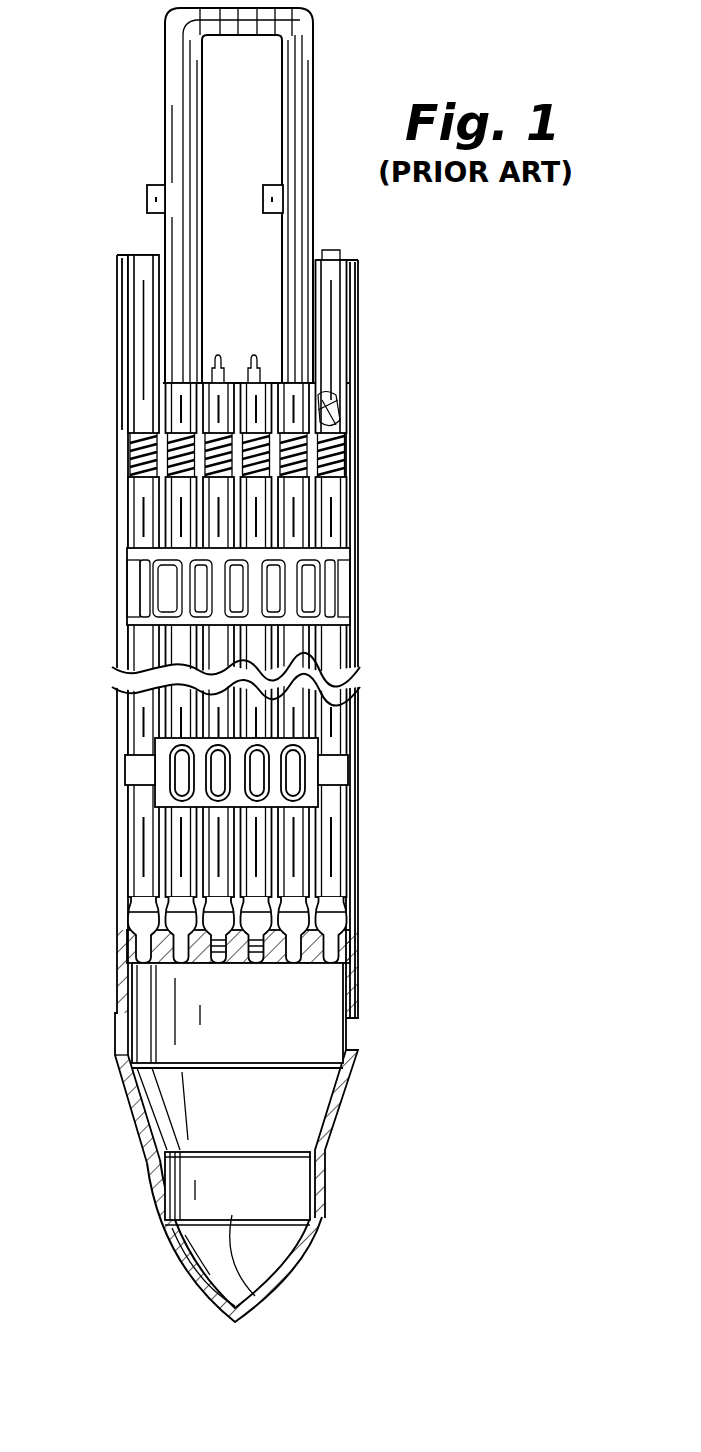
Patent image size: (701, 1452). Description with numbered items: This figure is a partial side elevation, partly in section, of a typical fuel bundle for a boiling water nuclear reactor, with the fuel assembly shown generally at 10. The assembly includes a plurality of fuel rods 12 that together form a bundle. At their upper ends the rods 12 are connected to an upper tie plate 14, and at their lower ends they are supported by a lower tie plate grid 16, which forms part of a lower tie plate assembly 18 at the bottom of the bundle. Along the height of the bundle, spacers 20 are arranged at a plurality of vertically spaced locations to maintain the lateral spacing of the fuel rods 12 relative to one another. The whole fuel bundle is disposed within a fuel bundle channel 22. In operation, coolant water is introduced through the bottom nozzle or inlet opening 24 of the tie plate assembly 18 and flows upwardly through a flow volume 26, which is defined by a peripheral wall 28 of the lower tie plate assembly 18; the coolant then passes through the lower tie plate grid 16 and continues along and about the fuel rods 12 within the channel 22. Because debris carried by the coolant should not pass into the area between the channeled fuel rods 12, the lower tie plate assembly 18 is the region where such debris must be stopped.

The fuel assembly 10 is at (440, 528).
The fuel rods 12 is at (328, 517).
The upper tie plate 14 is at (138, 413).
The lower tie plate grid 16 is at (345, 943).
The lower tie plate assembly 18 is at (380, 1160).
The spacers 20 is at (355, 600).
The fuel bundle channel 22 is at (118, 870).
The bottom nozzle or inlet opening 24 is at (253, 1200).
The flow volume 26 is at (315, 1035).
The peripheral wall 28 is at (130, 1098).